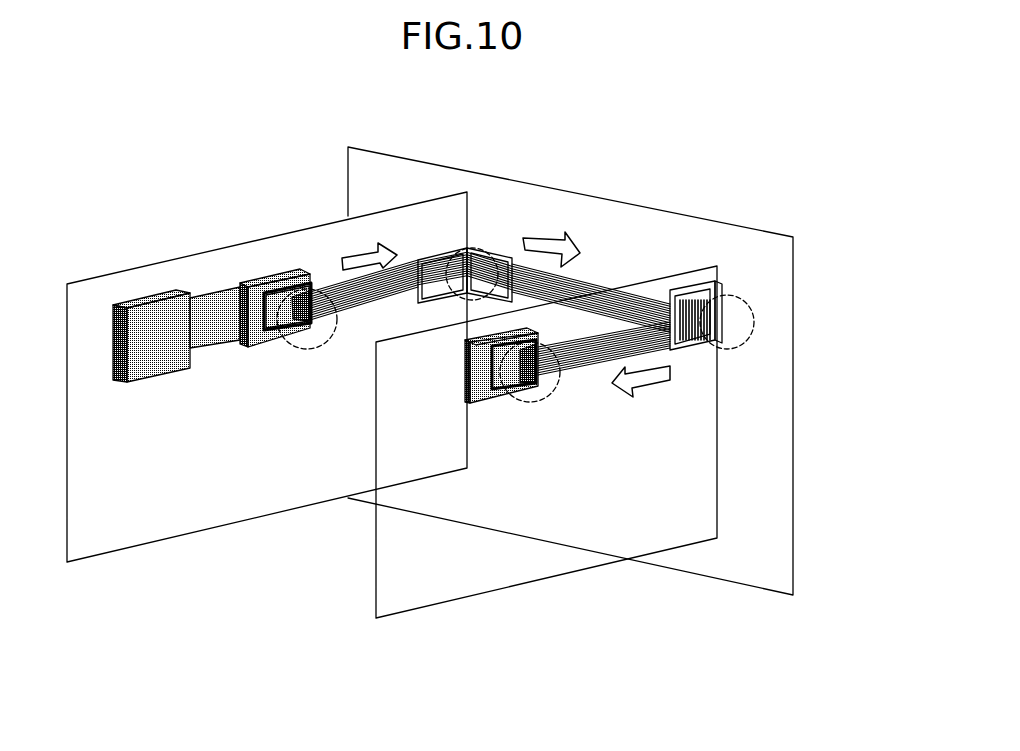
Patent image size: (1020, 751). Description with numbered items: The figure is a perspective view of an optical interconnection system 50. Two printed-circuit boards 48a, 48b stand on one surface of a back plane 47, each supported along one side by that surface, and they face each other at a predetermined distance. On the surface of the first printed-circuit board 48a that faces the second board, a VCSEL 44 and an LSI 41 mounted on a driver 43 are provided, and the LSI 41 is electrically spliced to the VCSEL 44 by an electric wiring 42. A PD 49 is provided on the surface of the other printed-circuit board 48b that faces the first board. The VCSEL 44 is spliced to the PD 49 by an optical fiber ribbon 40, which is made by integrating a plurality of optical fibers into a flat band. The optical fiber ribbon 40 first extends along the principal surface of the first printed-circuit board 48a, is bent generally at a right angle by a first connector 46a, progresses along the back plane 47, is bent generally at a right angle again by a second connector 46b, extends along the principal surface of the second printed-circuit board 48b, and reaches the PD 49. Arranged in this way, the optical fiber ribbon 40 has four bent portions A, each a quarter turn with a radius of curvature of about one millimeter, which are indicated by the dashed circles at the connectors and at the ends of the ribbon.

The optical fiber ribbon 40 is at (337, 290).
The LSI 41 is at (150, 298).
The electric wiring 42 is at (217, 295).
The driver 43 is at (260, 280).
The VCSEL 44 is at (313, 290).
The first connector 46a is at (443, 258).
The second connector 46b is at (707, 290).
The back plane 47 is at (753, 257).
The printed-circuit board 48a is at (140, 525).
The printed-circuit board 48b is at (403, 595).
The PD 49 is at (490, 400).
The optical interconnection system 50 is at (482, 145).
The bent portion A is at (480, 248).